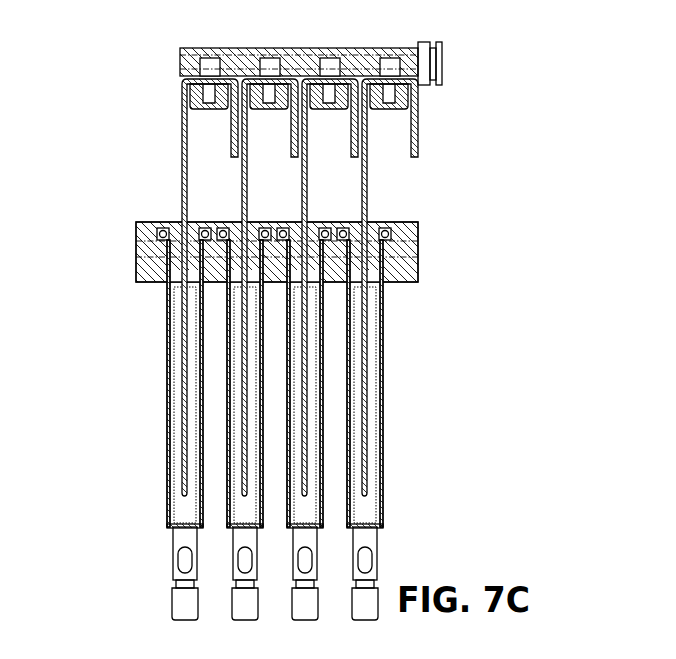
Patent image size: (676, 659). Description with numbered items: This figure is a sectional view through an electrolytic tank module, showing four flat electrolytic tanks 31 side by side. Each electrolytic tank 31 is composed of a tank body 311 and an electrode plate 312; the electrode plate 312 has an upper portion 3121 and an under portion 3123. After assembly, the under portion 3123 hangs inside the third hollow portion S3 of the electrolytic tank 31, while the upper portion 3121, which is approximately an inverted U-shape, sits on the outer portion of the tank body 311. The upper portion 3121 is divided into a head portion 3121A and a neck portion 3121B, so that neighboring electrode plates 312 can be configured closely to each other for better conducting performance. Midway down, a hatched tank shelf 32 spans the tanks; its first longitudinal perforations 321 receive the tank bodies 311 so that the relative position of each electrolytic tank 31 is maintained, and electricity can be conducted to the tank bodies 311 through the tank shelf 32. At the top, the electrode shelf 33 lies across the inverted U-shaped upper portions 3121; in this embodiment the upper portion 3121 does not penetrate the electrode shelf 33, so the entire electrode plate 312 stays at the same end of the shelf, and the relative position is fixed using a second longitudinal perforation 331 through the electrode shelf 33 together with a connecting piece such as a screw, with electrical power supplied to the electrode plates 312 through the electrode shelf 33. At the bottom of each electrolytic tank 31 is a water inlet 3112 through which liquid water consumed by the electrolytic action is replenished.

The electrolytic tank 31 is at (167, 403).
The tank body 311 is at (167, 321).
The electrode plate 312 is at (195, 78).
The upper portion 3121 is at (173, 120).
The head portion 3121A is at (185, 188).
The neck portion 3121B is at (243, 190).
The under portion 3123 is at (179, 364).
The water inlet 3112 is at (179, 559).
The tank shelf 32 is at (417, 235).
The first longitudinal perforation 321 is at (363, 221).
The electrode shelf 33 is at (408, 47).
The second longitudinal perforation 331 is at (327, 58).
The third hollow portion S3 is at (174, 507).